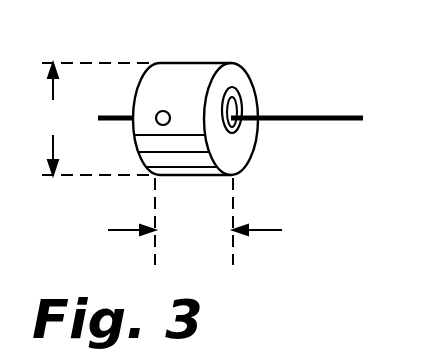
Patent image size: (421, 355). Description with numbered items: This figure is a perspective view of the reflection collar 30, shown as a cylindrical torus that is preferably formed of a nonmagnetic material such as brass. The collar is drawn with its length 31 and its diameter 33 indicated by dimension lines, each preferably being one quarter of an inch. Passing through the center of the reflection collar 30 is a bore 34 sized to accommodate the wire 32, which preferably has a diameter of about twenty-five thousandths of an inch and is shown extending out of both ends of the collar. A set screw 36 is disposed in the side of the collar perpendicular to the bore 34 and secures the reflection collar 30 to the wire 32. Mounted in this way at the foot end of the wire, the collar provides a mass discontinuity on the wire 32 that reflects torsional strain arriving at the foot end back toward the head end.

The reflection collar 30 is at (218, 27).
The length 31 is at (195, 221).
The wire 32 is at (352, 80).
The diameter 33 is at (91, 119).
The bore 34 is at (236, 88).
The set screw 36 is at (162, 111).